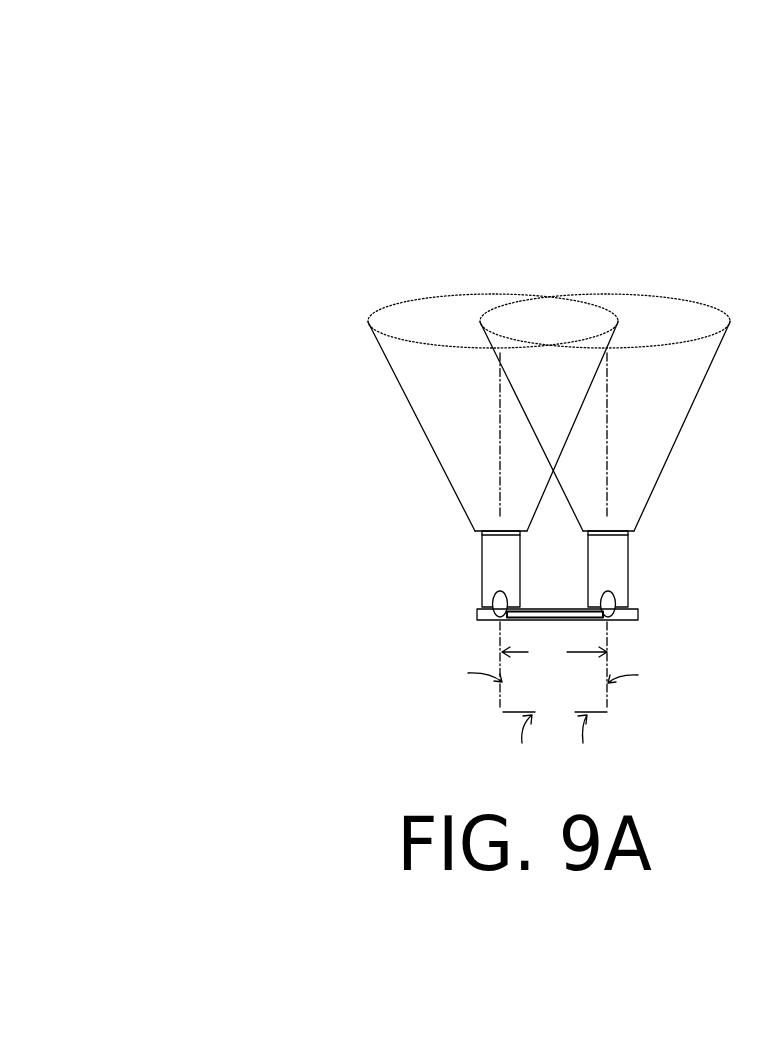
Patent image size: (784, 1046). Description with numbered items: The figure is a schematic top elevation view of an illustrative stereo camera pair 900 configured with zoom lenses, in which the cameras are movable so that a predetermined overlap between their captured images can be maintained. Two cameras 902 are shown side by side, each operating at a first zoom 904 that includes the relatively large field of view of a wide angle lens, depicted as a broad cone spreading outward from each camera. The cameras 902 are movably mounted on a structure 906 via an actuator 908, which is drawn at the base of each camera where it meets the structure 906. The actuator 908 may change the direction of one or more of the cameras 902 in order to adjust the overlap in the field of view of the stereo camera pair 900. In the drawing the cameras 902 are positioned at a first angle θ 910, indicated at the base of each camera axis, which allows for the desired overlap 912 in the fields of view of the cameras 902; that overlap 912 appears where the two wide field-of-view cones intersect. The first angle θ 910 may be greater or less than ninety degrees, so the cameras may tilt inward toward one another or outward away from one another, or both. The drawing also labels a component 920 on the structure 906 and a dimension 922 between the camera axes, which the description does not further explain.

The stereo camera pair 900 is at (246, 464).
The cameras 902 is at (468, 560).
The first zoom 904 is at (386, 397).
The structure 906 is at (480, 618).
The actuator 908 is at (616, 601).
The first angle θ 910 is at (512, 698).
The overlap 912 is at (510, 312).
The connector strip 920 is at (603, 617).
The camera separation distance d 922 is at (557, 658).